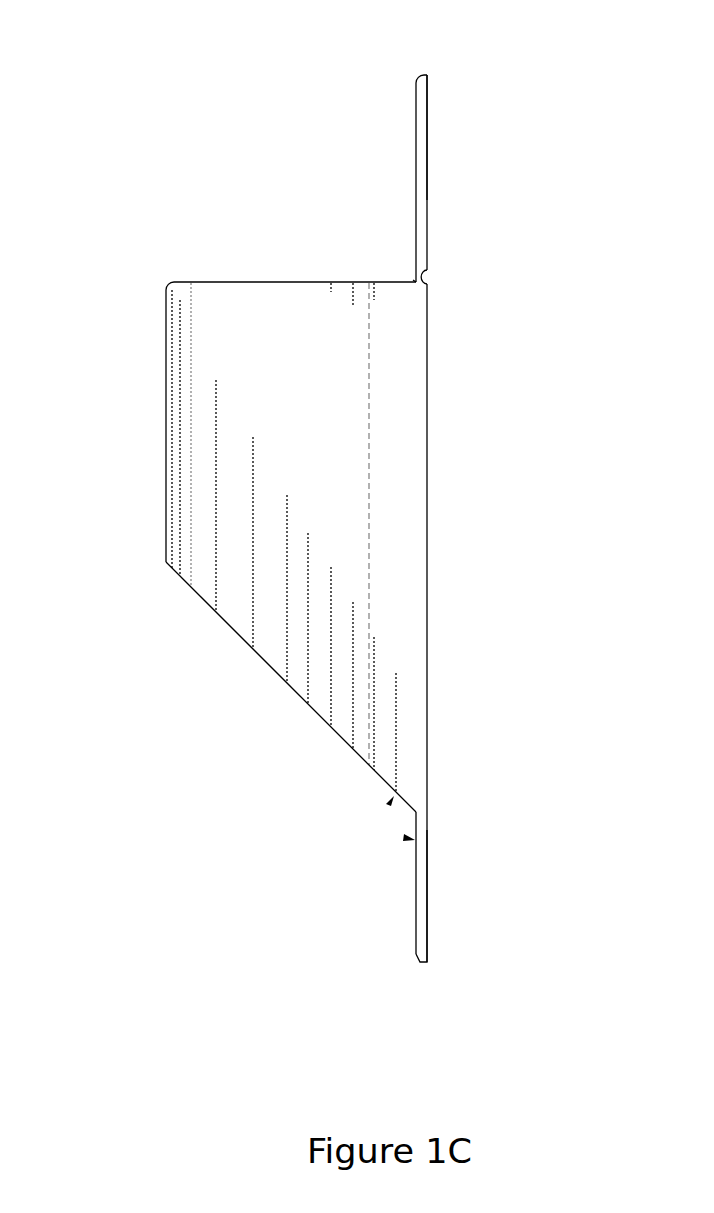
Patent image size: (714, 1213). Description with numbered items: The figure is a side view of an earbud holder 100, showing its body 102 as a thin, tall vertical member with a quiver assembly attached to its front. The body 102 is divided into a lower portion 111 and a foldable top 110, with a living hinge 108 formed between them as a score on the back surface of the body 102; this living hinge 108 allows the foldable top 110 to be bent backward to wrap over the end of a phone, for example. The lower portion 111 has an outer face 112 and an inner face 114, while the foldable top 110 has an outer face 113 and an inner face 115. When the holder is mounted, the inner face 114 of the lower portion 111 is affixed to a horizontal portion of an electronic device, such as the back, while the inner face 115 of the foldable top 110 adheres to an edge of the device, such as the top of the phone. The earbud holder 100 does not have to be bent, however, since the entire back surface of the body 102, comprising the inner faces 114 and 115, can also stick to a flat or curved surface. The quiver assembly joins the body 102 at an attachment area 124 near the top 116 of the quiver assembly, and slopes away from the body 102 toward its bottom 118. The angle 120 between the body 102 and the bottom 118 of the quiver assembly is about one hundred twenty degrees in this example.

The earbud holder 100 is at (156, 244).
The body 102 is at (426, 76).
The living hinge 108 is at (429, 280).
The foldable top of body 110 is at (428, 188).
The lower portion of body 111 is at (428, 560).
The outer face of lower portion of body 112 is at (415, 888).
The outer face of foldable top of body 113 is at (415, 152).
The inner face of lower portion of body 114 is at (428, 907).
The inner face of foldable top of body 115 is at (428, 137).
The top of quiver assembly 116 is at (250, 280).
The bottom of quiver assembly 118 is at (270, 675).
The angle between body and bottom of quiver assembly 120 is at (406, 838).
The attachment area between body and quiver assembly 124 is at (415, 280).